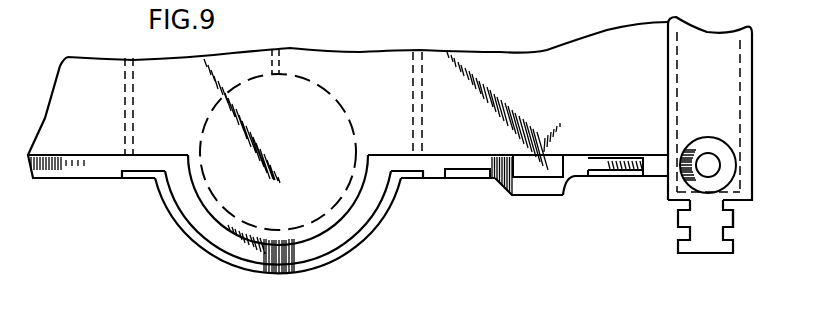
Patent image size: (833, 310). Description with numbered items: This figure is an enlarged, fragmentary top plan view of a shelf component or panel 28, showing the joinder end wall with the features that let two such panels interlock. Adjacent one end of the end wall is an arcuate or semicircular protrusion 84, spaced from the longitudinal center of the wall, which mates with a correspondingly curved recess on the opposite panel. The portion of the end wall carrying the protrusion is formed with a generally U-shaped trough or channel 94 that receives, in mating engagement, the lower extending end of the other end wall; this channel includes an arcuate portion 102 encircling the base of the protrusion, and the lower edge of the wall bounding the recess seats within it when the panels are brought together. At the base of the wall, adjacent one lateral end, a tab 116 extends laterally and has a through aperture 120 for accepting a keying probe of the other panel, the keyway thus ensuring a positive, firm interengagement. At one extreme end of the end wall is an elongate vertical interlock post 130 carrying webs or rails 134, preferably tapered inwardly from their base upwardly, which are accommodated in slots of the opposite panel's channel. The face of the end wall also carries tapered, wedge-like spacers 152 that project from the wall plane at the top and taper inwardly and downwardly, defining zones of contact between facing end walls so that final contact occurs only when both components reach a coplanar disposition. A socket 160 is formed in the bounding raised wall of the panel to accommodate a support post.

The panel 28 is at (530, 70).
The end wall protrusion 84 is at (217, 188).
The arcuate channel portion 102 is at (357, 213).
The channel 94 is at (471, 163).
The through aperture 120 is at (527, 170).
The tab 116 is at (563, 188).
The spacer 152 is at (607, 163).
The socket 160 is at (713, 165).
The vertical post 130 is at (713, 240).
The rail 134 is at (734, 214).